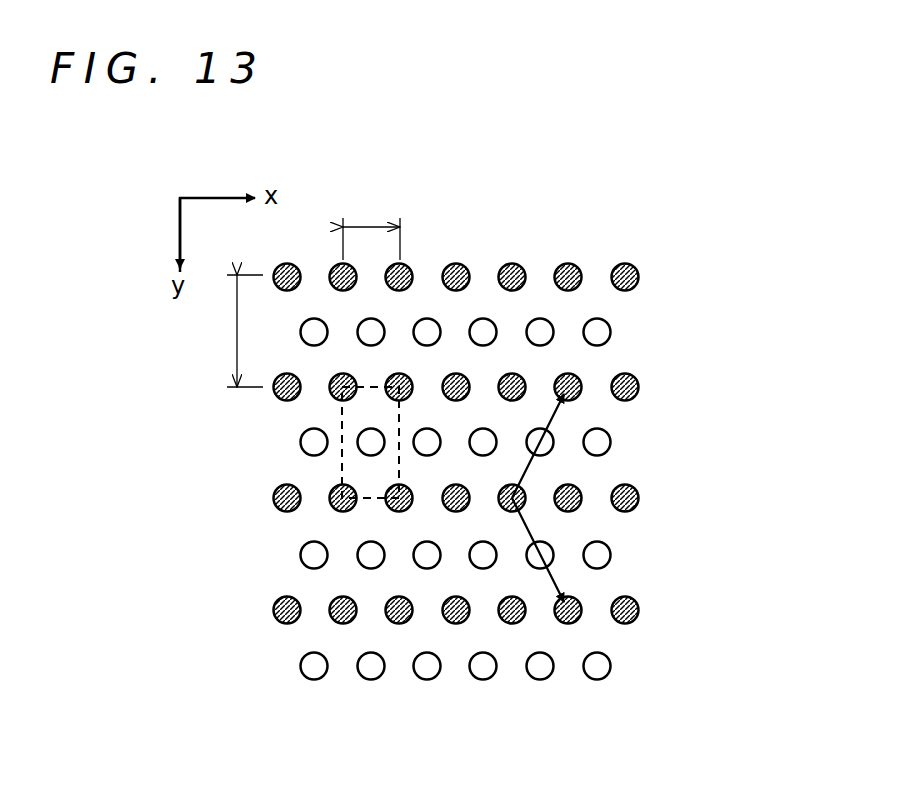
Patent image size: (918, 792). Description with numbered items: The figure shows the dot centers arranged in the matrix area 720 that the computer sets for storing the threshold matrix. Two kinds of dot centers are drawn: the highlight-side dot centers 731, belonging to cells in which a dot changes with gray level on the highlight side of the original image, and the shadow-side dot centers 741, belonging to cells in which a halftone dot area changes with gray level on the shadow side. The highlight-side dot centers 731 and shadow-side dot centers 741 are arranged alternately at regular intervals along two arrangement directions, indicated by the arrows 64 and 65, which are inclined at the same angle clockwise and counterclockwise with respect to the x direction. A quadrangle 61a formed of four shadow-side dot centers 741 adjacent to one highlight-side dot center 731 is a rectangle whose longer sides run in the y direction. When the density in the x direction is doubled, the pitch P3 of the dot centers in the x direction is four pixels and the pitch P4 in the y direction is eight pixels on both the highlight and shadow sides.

The matrix area 720 is at (548, 192).
The shadow-side dot centers 741 is at (571, 270).
The highlight-side dot centers 731 is at (594, 332).
The arrow indicating arrangement direction 64 is at (528, 468).
The arrow indicating arrangement direction 65 is at (528, 530).
The quadrangle 61a is at (337, 468).
The pitch in the x direction P3 is at (370, 226).
The pitch in the y direction P4 is at (237, 337).